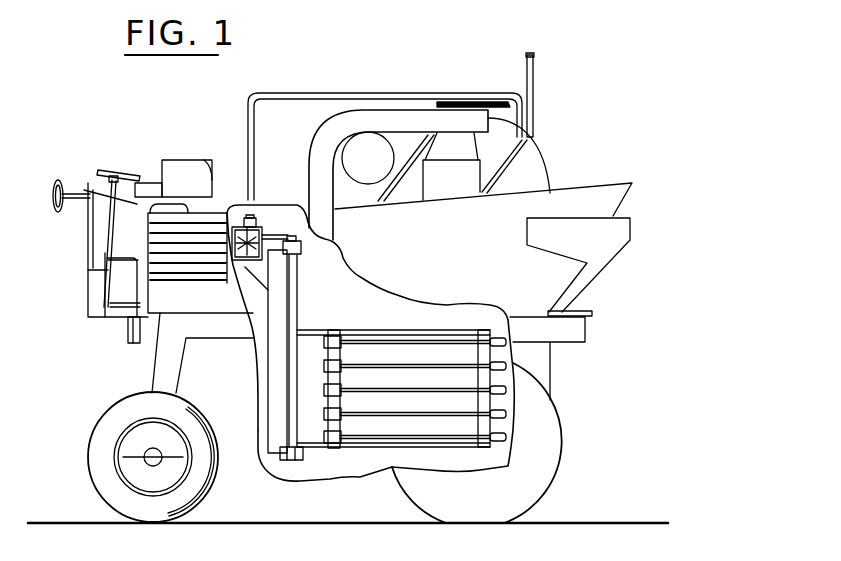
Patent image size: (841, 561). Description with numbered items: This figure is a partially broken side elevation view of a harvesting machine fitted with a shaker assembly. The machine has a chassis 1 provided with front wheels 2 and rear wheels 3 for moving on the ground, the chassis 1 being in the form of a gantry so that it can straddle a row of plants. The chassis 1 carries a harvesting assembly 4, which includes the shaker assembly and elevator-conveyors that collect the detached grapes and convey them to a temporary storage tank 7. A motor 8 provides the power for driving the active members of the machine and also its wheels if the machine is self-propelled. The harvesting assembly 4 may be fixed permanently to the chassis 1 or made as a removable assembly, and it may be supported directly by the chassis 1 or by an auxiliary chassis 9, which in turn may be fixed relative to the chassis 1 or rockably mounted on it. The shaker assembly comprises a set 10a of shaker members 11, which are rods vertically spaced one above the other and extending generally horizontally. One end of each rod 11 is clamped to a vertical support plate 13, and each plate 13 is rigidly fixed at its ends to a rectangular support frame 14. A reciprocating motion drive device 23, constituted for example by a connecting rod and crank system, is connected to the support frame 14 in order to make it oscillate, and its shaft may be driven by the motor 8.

The chassis 1 is at (233, 342).
The front wheels 2 is at (98, 457).
The rear wheels 3 is at (548, 465).
The harvesting assembly 4 is at (264, 483).
The temporary storage tank 7 is at (601, 184).
The motor 8 is at (235, 190).
The auxiliary chassis 9 is at (256, 290).
The set of shaker members 10a is at (410, 312).
The shaker members 11 is at (423, 390).
The vertical support plate 13 is at (337, 372).
The rectangular support frame 14 is at (375, 322).
The reciprocating motion drive device 23 is at (276, 233).